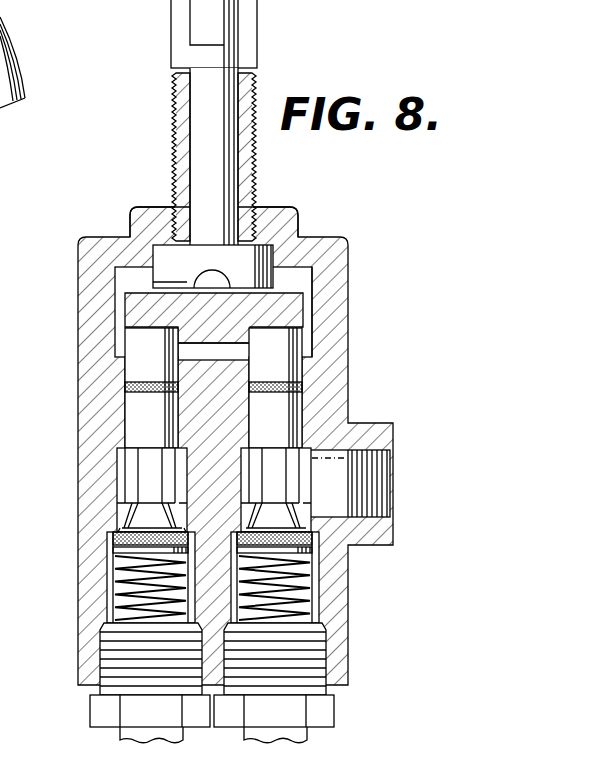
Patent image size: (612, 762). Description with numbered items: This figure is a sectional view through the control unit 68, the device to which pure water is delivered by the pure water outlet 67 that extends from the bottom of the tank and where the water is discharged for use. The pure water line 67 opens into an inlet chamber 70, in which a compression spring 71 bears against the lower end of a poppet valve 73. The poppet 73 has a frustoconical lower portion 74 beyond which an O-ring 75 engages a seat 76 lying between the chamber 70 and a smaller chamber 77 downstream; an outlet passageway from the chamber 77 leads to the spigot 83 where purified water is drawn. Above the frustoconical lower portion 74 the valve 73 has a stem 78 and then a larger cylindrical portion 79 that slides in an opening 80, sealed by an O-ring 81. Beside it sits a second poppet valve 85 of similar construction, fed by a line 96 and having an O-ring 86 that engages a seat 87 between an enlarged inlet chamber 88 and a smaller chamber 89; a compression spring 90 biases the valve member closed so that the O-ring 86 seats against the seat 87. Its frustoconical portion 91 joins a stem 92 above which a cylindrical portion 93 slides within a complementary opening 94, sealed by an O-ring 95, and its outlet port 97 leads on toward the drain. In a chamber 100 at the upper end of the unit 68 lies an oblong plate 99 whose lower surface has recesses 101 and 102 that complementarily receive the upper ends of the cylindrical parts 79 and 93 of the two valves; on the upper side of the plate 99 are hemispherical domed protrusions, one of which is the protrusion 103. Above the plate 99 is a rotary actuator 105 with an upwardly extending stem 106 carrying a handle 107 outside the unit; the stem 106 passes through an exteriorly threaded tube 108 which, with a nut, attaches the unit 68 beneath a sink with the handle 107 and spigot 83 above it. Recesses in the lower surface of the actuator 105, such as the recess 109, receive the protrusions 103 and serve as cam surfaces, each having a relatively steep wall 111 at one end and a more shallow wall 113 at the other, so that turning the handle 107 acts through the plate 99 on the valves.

The pure water outlet 67 is at (120, 735).
The control unit 68 is at (72, 512).
The inlet chamber 70 is at (110, 580).
The compression spring 71 is at (120, 600).
The poppet valve 73 is at (125, 494).
The frustoconical lower portion 74 is at (120, 535).
The left spring retainer 75 is at (117, 542).
The seat 76 is at (190, 518).
The smaller chamber 77 is at (123, 470).
The stem 78 is at (118, 452).
The cylindrical portion 79 is at (128, 428).
The opening 80 is at (128, 403).
The O-ring 81 is at (124, 385).
The spigot 83 is at (27, 82).
The second poppet valve 85 is at (380, 428).
The O-ring 86 is at (320, 533).
The seat 87 is at (309, 535).
The enlarged inlet chamber 88 is at (320, 590).
The smaller chamber 89 is at (306, 480).
The compression spring 90 is at (318, 612).
The frustoconical portion 91 is at (268, 518).
The stem 92 is at (273, 476).
The cylindrical portion 93 is at (306, 450).
The opening 94 is at (305, 392).
The O-ring 95 is at (310, 385).
The line 96 is at (310, 735).
The outlet port 97 is at (388, 497).
The oblong plate 99 is at (295, 312).
The chamber 100 is at (305, 275).
The recess 101 is at (128, 340).
The recess 102 is at (278, 338).
The domed protrusion 103 is at (212, 292).
The rotary actuator 105 is at (142, 232).
The stem 106 is at (195, 167).
The handle 107 is at (175, 14).
The exteriorly threaded tube 108 is at (182, 143).
The recess 109 is at (208, 283).
The steep wall 111 is at (232, 282).
The shallow wall 113 is at (185, 282).